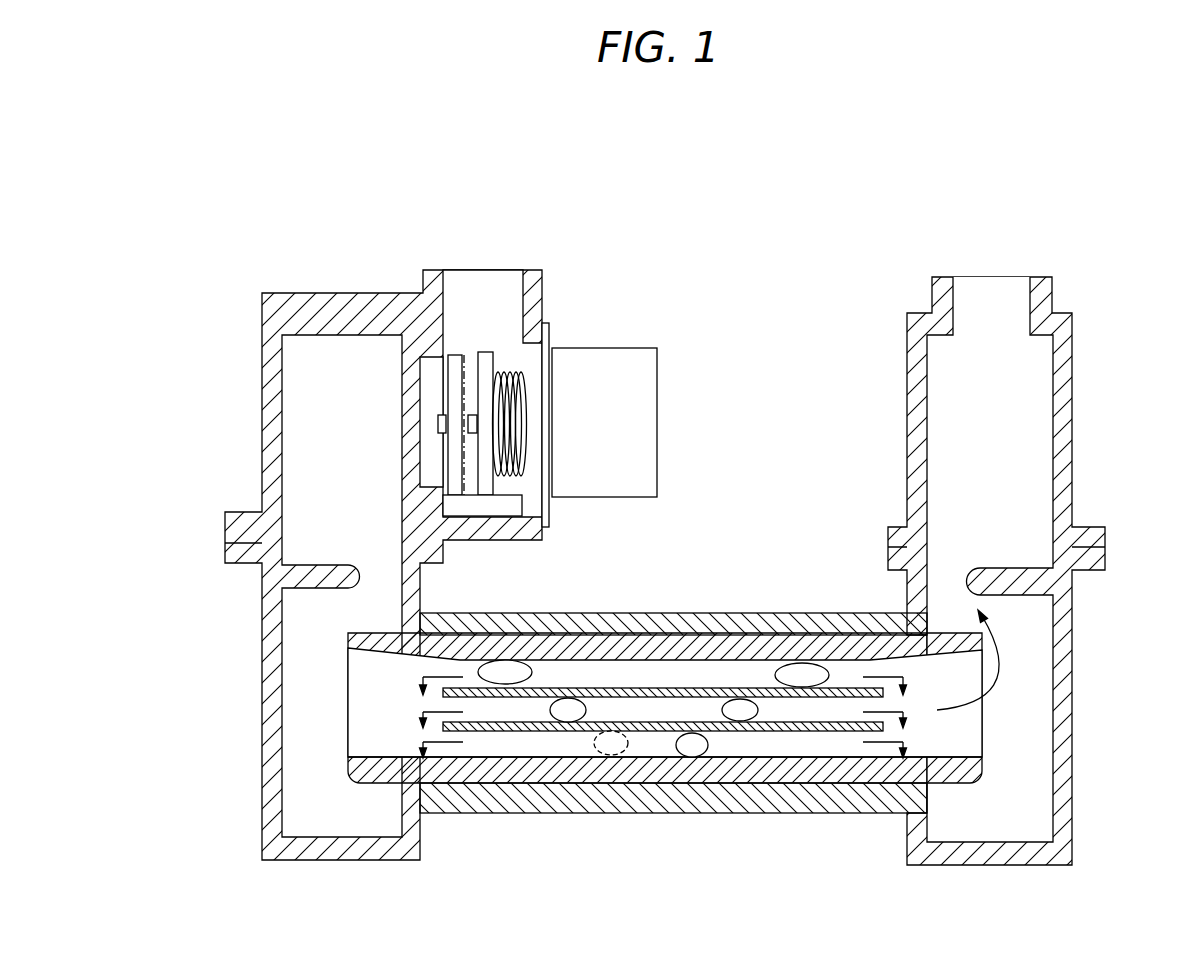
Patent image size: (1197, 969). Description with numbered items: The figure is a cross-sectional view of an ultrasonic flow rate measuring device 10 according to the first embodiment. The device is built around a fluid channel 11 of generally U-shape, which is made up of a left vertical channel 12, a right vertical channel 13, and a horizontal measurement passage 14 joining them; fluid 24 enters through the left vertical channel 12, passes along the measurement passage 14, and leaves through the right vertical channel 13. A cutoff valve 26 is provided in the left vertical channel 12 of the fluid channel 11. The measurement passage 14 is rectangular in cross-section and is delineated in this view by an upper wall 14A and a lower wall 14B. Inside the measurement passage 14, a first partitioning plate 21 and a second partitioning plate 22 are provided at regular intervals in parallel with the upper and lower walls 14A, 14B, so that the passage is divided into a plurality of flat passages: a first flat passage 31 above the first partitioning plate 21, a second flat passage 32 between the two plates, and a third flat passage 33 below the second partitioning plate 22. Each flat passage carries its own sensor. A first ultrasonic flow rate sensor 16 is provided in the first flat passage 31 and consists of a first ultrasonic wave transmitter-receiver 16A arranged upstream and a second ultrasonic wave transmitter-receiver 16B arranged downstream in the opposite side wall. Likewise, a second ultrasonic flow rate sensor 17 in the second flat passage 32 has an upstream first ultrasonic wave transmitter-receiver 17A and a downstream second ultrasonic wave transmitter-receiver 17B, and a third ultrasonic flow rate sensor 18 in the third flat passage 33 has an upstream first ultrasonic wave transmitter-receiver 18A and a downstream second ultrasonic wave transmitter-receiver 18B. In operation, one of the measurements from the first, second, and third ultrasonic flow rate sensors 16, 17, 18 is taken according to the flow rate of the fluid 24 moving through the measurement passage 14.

The ultrasonic flow rate measuring device 10 is at (773, 252).
The fluid channel 11 is at (335, 292).
The left vertical channel 12 is at (262, 397).
The right vertical channel 13 is at (1073, 372).
The measurement passage 14 is at (680, 613).
The upper wall 14A is at (878, 645).
The lower wall 14B is at (882, 780).
The first ultrasonic flow rate sensor 16 is at (519, 668).
The first ultrasonic wave transmitter-receiver 16A is at (505, 660).
The second ultrasonic wave transmitter-receiver 16B is at (803, 664).
The second ultrasonic flow rate sensor 17 is at (566, 733).
The first ultrasonic wave transmitter-receiver 17A is at (577, 697).
The second ultrasonic wave transmitter-receiver 17B is at (752, 733).
The third ultrasonic flow rate sensor 18 is at (617, 760).
The first ultrasonic wave transmitter-receiver 18A is at (603, 752).
The second ultrasonic wave transmitter-receiver 18B is at (690, 760).
The first partitioning plate 21 is at (756, 688).
The second partitioning plate 22 is at (823, 733).
The fluid 24 is at (380, 708).
The cutoff valve 26 is at (457, 352).
The first flat passage 31 is at (686, 667).
The second flat passage 32 is at (787, 713).
The third flat passage 33 is at (727, 743).